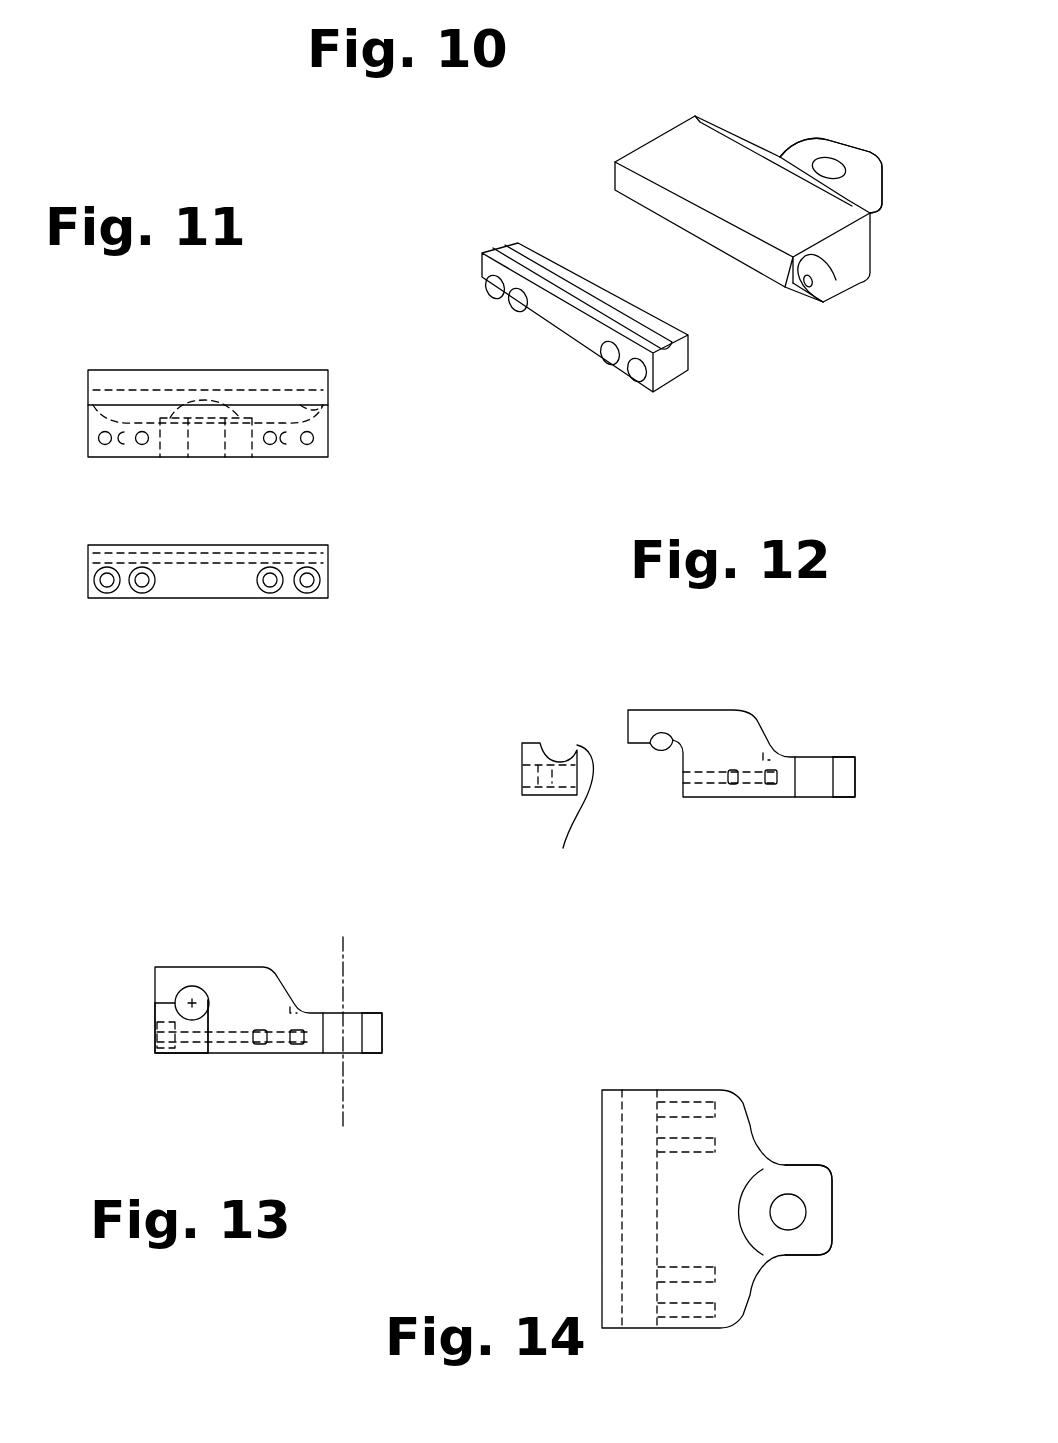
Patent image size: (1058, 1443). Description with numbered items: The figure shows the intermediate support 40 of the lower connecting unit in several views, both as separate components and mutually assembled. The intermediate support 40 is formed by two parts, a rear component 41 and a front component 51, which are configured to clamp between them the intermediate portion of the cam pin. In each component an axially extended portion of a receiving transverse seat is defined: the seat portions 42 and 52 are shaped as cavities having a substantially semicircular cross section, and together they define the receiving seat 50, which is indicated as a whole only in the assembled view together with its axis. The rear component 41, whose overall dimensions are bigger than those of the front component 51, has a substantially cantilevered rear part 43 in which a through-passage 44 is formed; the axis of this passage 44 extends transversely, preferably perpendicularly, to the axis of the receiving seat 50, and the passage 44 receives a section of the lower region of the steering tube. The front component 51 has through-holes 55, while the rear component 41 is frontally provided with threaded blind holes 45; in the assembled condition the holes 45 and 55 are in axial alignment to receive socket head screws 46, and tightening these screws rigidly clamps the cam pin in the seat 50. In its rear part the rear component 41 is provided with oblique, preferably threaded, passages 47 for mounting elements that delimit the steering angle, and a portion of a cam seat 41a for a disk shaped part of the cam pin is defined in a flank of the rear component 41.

In FIG. 10, the intermediate support 40 is at (604, 111).
In FIG. 13, the intermediate support 40 is at (160, 903).
In FIG. 10, the rear component 41 is at (692, 104).
In FIG. 11, the rear component 41 is at (193, 360).
In FIG. 12, the rear component 41 is at (770, 695).
In FIG. 13, the rear component 41 is at (273, 961).
In FIG. 14, the rear component 41 is at (586, 1184).
In FIG. 10, the cam seat portion 41a is at (838, 304).
In FIG. 10, the seat portion 42 is at (793, 250).
In FIG. 11, the seat portion 42 is at (333, 400).
In FIG. 12, the seat portion 42 is at (660, 733).
In FIG. 14, the seat portion 42 is at (640, 1100).
In FIG. 10, the cantilevered rear part 43 is at (834, 146).
In FIG. 12, the cantilevered rear part 43 is at (843, 798).
In FIG. 13, the cantilevered rear part 43 is at (380, 1032).
In FIG. 14, the cantilevered rear part 43 is at (820, 1220).
In FIG. 10, the through-passage 44 is at (826, 166).
In FIG. 11, the through-passage 44 is at (220, 443).
In FIG. 12, the through-passage 44 is at (815, 770).
In FIG. 13, the through-passage 44 is at (352, 1055).
In FIG. 14, the through-passage 44 is at (788, 1195).
In FIG. 10, the threaded blind holes 45 is at (804, 289).
In FIG. 11, the threaded blind holes 45 is at (142, 446).
In FIG. 12, the threaded blind holes 45 is at (706, 790).
In FIG. 13, the threaded blind holes 45 is at (232, 1037).
In FIG. 14, the threaded blind holes 45 is at (683, 1100).
In FIG. 13, the socket head screws 46 is at (157, 1035).
In FIG. 14, the oblique passages 47 is at (735, 1125).
In FIG. 13, the receiving transverse seat 50 is at (178, 1000).
In FIG. 10, the front component 51 is at (465, 246).
In FIG. 11, the front component 51 is at (207, 616).
In FIG. 12, the front component 51 is at (527, 724).
In FIG. 13, the front component 51 is at (179, 1062).
In FIG. 10, the seat portion 52 is at (540, 250).
In FIG. 11, the seat portion 52 is at (305, 557).
In FIG. 12, the seat portion 52 is at (574, 812).
In FIG. 10, the through-holes 55 is at (518, 313).
In FIG. 11, the through-holes 55 is at (142, 592).
In FIG. 12, the through-holes 55 is at (530, 768).